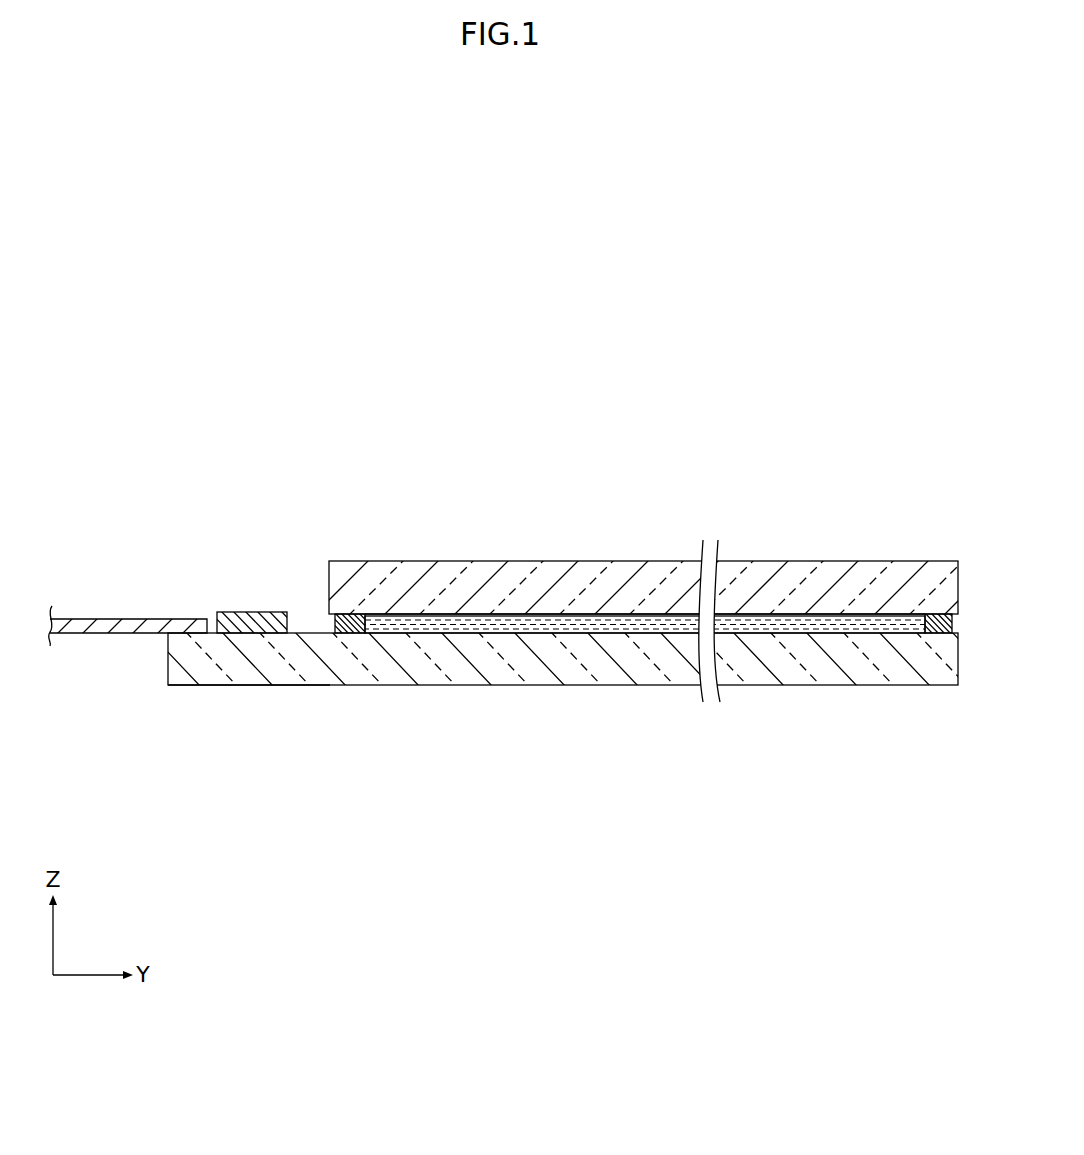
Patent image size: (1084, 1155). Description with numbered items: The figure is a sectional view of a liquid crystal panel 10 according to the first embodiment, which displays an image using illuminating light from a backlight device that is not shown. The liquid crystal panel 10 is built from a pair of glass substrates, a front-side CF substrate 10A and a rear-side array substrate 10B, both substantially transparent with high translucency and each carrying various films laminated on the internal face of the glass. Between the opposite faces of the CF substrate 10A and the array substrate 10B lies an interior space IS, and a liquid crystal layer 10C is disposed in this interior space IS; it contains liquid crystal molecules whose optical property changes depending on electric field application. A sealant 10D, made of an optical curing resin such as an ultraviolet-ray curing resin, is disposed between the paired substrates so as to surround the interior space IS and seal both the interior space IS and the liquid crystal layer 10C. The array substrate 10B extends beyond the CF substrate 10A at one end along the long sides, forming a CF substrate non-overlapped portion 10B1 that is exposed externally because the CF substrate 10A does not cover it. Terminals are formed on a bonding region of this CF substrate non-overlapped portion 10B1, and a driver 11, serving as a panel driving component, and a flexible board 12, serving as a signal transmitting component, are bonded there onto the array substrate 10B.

The liquid crystal panel 10 is at (802, 560).
The CF substrate 10A is at (547, 578).
The array substrate 10B is at (538, 670).
The CF substrate non-overlapped portion 10B1 is at (248, 670).
The liquid crystal layer 10C is at (444, 626).
The sealant 10D is at (348, 626).
The interior space IS is at (626, 612).
The driver 11 is at (251, 612).
The flexible board 12 is at (122, 628).